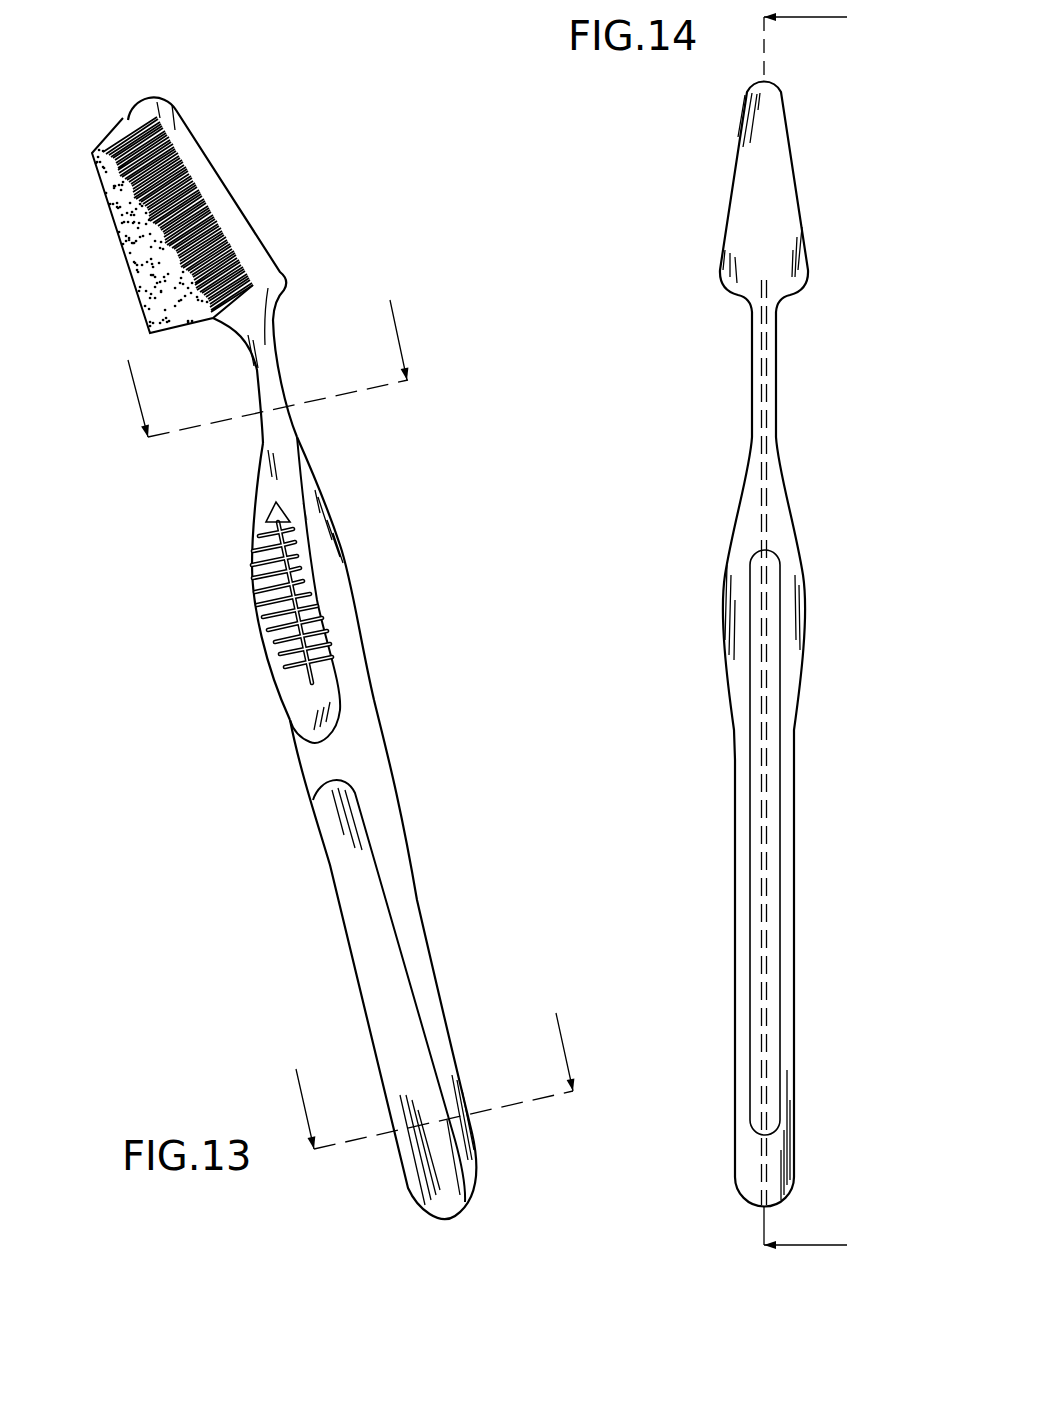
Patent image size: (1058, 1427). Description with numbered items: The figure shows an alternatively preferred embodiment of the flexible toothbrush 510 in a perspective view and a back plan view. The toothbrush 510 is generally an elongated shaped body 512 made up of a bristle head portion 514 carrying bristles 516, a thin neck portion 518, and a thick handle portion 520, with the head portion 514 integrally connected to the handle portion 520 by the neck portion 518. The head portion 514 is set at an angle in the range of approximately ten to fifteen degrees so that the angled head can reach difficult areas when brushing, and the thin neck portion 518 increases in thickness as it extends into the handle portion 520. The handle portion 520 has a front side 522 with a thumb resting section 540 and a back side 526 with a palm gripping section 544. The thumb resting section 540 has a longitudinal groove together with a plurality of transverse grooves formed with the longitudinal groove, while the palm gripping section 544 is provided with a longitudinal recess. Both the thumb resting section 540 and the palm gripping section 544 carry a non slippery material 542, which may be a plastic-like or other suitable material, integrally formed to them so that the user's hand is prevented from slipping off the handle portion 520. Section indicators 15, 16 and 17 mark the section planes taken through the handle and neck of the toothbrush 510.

In FIG. 13, the flexible toothbrush 510 is at (323, 250).
In FIG. 14, the flexible toothbrush 510 is at (857, 285).
In FIG. 13, the elongated shaped body 512 is at (352, 555).
In FIG. 13, the bristle head portion 514 is at (222, 190).
In FIG. 14, the bristle head portion 514 is at (735, 227).
In FIG. 13, the bristles 516 is at (143, 268).
In FIG. 13, the thin neck portion 518 is at (270, 393).
In FIG. 14, the thin neck portion 518 is at (776, 393).
In FIG. 13, the thick handle portion 520 is at (370, 758).
In FIG. 14, the thick handle portion 520 is at (786, 878).
In FIG. 13, the front side 522 is at (315, 760).
In FIG. 14, the back side 526 is at (795, 590).
In FIG. 13, the thumb resting section 540 is at (250, 606).
In FIG. 13, the non slippery material 542 is at (300, 613).
In FIG. 14, the non slippery material 542 is at (757, 788).
In FIG. 14, the palm gripping section 544 is at (738, 1058).
In FIG. 14, the section line 15- 15 is at (829, 631).
In FIG. 13, the section line 16- 16 is at (256, 356).
In FIG. 13, the section line 17- 17 is at (427, 1066).